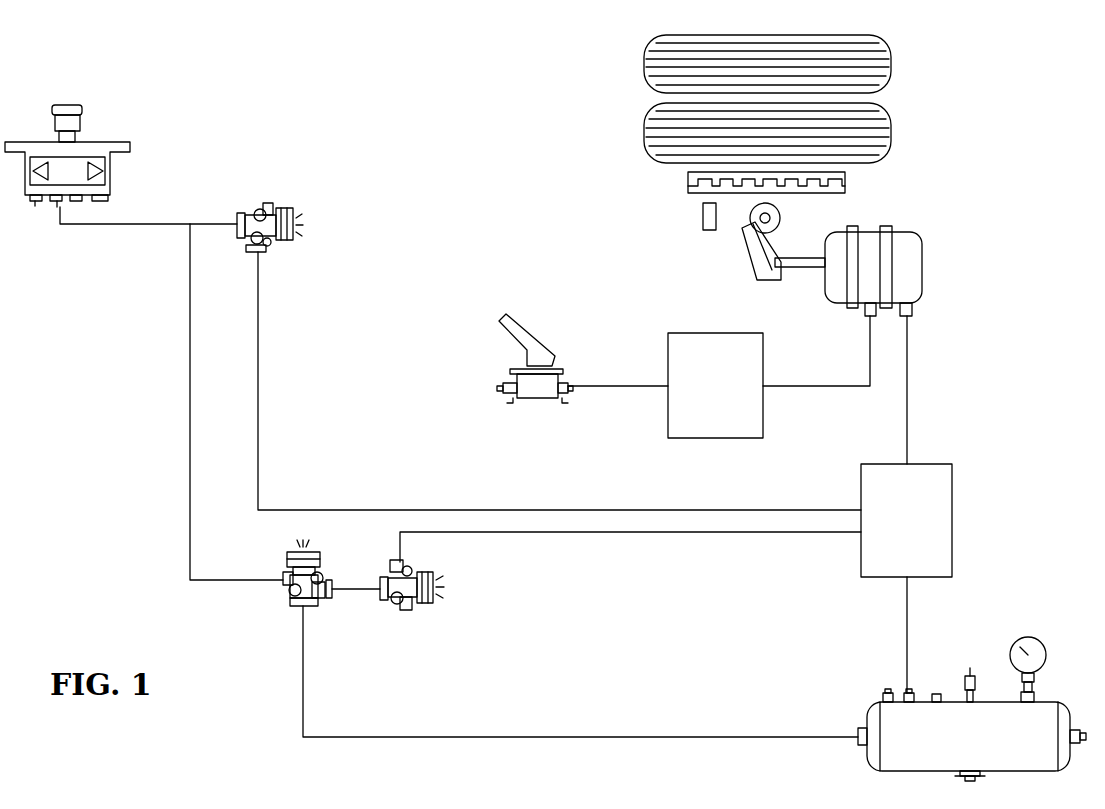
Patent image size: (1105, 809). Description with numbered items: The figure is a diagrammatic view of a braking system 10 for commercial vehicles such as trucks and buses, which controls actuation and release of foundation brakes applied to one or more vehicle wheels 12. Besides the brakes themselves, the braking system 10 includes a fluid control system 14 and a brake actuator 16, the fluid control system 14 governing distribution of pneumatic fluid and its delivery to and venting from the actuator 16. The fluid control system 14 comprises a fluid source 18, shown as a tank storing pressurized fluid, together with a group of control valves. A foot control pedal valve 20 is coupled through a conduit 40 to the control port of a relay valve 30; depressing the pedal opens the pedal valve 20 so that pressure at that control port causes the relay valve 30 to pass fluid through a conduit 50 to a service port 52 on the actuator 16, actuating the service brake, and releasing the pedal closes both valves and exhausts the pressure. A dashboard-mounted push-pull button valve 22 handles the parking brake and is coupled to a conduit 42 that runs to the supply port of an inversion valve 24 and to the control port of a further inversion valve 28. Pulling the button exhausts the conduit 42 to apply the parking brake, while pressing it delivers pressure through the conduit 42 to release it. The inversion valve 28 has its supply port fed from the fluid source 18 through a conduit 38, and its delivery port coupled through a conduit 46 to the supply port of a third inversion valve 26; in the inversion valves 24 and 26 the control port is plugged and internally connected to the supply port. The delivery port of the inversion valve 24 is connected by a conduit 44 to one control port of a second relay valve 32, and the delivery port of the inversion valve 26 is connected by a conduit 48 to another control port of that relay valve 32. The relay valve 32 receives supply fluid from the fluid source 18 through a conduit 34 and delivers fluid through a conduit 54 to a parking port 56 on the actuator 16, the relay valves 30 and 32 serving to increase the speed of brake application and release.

The braking system 10 is at (409, 192).
The vehicle wheels 12 is at (891, 58).
The fluid control system 14 is at (157, 513).
The brake actuator 16 is at (905, 262).
The fluid source 18 is at (1000, 722).
The foot control pedal valve 20 is at (537, 386).
The parking brake control valve 22 is at (86, 152).
The inversion valve 24 is at (270, 244).
The inversion valve 26 is at (415, 605).
The inversion valve 28 is at (288, 598).
The relay valve 30 is at (716, 440).
The relay valve 32 is at (953, 522).
The conduit 34 is at (906, 636).
The conduit 38 is at (674, 737).
The conduit 40 is at (618, 385).
The conduit 42 is at (120, 227).
The fluid conduit 44 is at (258, 442).
The conduit 46 is at (360, 595).
The conduit 48 is at (580, 533).
The conduit 50 is at (815, 388).
The service port 52 is at (865, 318).
The conduit 54 is at (908, 400).
The parking port 56 is at (913, 308).